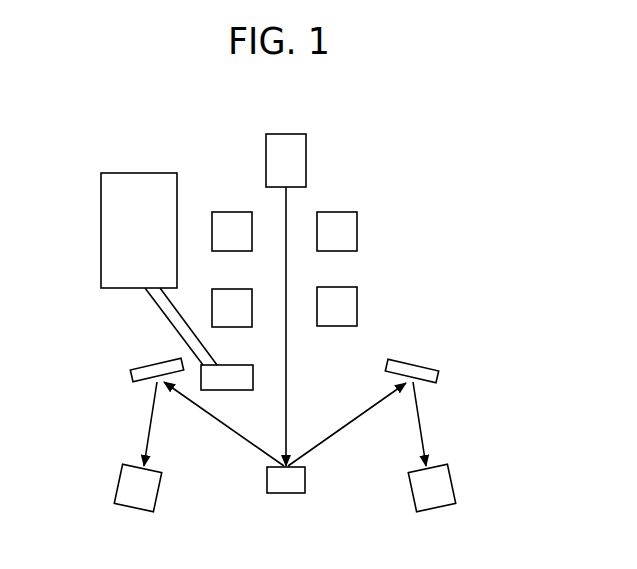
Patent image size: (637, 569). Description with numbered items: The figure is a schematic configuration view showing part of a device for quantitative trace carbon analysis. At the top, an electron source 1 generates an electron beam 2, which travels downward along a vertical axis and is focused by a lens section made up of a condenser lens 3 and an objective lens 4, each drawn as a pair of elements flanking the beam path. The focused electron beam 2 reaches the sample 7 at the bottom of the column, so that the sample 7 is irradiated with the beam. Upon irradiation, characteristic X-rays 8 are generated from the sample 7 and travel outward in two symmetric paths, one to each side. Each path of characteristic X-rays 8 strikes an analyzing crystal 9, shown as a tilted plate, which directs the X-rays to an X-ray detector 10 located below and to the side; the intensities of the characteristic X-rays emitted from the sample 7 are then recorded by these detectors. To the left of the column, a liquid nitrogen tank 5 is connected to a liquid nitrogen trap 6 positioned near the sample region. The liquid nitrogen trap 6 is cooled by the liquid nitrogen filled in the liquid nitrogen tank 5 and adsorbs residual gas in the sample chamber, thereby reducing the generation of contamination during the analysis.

The electron source 1 is at (284, 134).
The electron beam 2 is at (288, 358).
The condenser lens 3 is at (235, 212).
The objective lens 4 is at (234, 289).
The liquid nitrogen tank 5 is at (101, 237).
The liquid nitrogen trap 6 is at (243, 365).
The sample 7 is at (287, 493).
The characteristic X-rays 8 is at (149, 425).
The analyzing crystals 9 is at (153, 360).
The X-ray detectors 10 is at (118, 488).